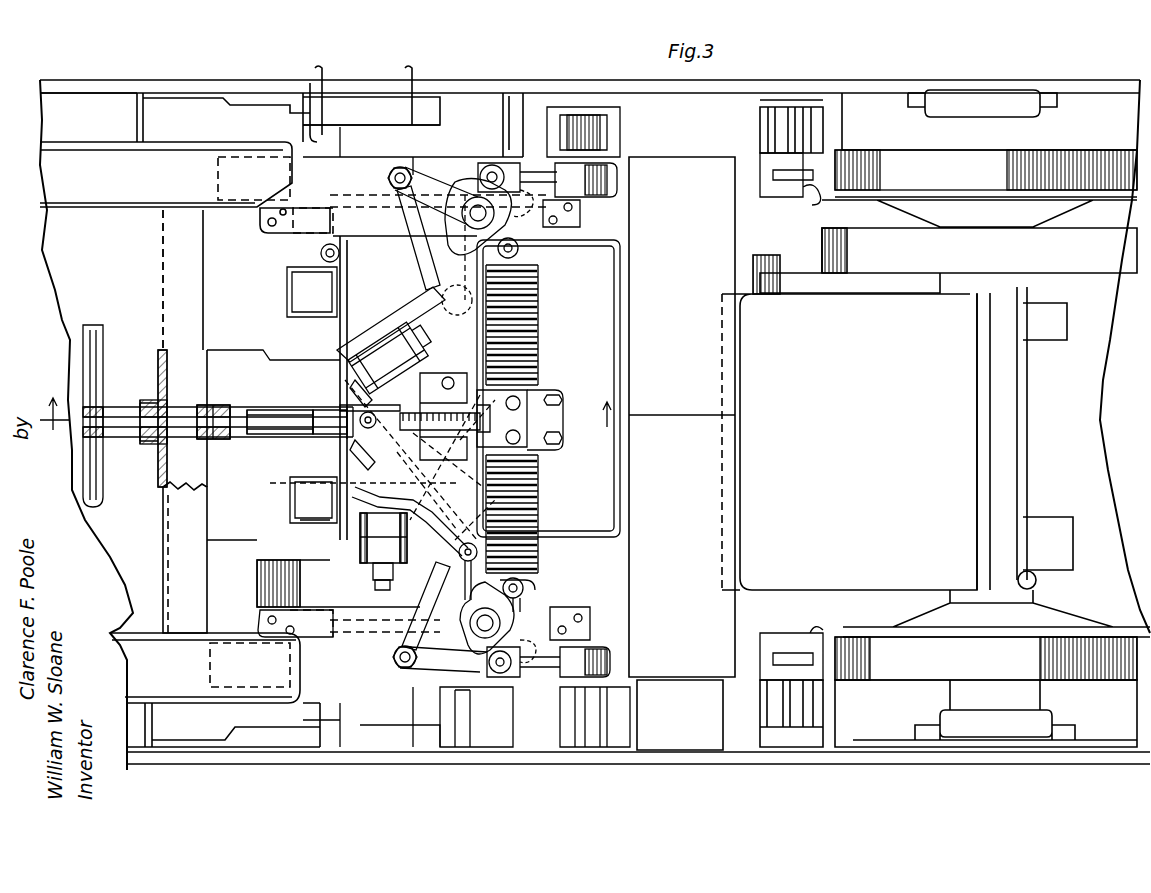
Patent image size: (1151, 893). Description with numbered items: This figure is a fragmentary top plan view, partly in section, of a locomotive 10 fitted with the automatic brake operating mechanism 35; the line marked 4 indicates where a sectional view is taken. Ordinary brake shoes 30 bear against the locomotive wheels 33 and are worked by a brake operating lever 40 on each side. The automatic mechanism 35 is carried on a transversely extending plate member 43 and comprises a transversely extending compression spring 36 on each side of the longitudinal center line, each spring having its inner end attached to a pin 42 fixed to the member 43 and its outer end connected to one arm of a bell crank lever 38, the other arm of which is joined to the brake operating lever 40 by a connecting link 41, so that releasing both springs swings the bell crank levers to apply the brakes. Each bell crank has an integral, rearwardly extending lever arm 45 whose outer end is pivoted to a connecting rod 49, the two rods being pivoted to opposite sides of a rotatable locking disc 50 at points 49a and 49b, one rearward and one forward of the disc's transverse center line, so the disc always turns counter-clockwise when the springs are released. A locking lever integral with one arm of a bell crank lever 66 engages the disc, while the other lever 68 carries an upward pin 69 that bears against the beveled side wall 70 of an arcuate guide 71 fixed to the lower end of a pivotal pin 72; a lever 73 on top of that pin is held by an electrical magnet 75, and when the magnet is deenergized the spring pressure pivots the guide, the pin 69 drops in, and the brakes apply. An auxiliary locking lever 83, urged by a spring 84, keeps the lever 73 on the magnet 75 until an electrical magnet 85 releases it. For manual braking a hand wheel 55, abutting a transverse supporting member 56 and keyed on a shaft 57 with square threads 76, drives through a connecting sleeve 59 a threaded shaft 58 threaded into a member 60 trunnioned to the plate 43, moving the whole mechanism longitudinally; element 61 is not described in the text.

The locomotive 10 is at (595, 418).
The section line 4 is at (325, 400).
The brake shoes 30 is at (515, 160).
The wheel 33 is at (440, 192).
The automatic brake operating mechanism 35 is at (300, 360).
The compression spring 36 is at (540, 325).
The bell crank lever 38 is at (462, 185).
The brake operating lever 40 is at (620, 178).
The connecting link 41 is at (560, 235).
The pin 42 is at (520, 403).
The member 43 is at (567, 433).
The lever arm 45 is at (422, 157).
The connecting rod 49 is at (392, 208).
The pivotal point 49a is at (486, 247).
The pivotal point 49b is at (515, 450).
The locking disc 50 is at (548, 388).
The hand wheel 55 is at (100, 335).
The transverse supporting member 56 is at (163, 263).
The shaft 57 is at (133, 410).
The threaded shaft 58 is at (290, 410).
The connecting sleeve 59 is at (258, 407).
The member 60 is at (382, 375).
The rack guide 61 is at (420, 395).
The bell crank lever 66 is at (360, 425).
The lever 68 is at (360, 455).
The pin 69 is at (540, 518).
The side wall 70 is at (461, 571).
The arcuate guide 71 is at (385, 592).
The pivotal pin 72 is at (535, 585).
The lever 73 is at (360, 528).
The electrical magnet 75 is at (360, 540).
The square threads 76 is at (210, 410).
The auxiliary locking lever 83 is at (335, 352).
The spring 84 is at (345, 405).
The electrical magnet 85 is at (392, 340).